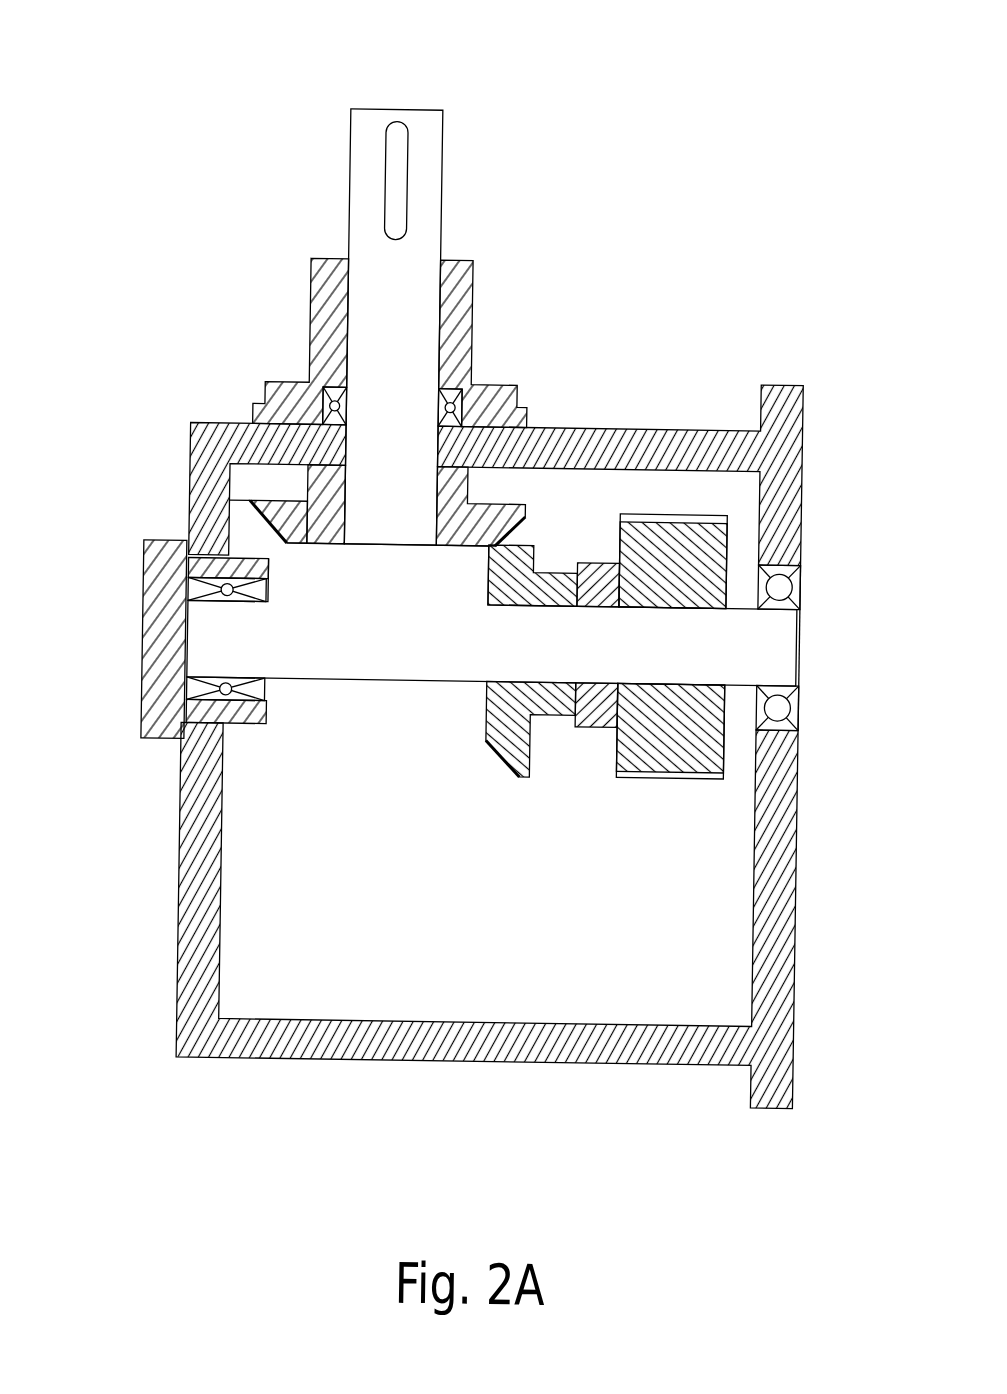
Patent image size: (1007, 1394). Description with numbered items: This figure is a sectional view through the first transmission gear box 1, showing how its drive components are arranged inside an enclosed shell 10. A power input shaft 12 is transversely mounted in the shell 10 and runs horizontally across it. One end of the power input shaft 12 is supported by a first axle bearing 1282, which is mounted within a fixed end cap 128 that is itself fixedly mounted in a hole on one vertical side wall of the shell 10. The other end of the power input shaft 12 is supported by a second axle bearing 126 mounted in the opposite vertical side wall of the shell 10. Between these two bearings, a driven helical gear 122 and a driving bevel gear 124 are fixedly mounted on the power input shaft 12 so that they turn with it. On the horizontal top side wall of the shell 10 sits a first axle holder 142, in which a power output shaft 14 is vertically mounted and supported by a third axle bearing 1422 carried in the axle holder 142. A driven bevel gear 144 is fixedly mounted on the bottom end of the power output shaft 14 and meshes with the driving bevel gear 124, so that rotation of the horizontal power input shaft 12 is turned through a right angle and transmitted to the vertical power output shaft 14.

The first transmission gear box 1 is at (690, 250).
The enclosed shell 10 is at (790, 398).
The power input shaft 12 is at (779, 644).
The power output shaft 14 is at (360, 120).
The driven helical gear 122 is at (644, 543).
The driving bevel gear 124 is at (534, 532).
The second axle bearing 126 is at (800, 578).
The fixed end cap 128 is at (153, 702).
The first axle holder 142 is at (463, 328).
The driven bevel gear 144 is at (248, 506).
The first axle bearing 1282 is at (193, 590).
The third axle bearing 1422 is at (312, 393).